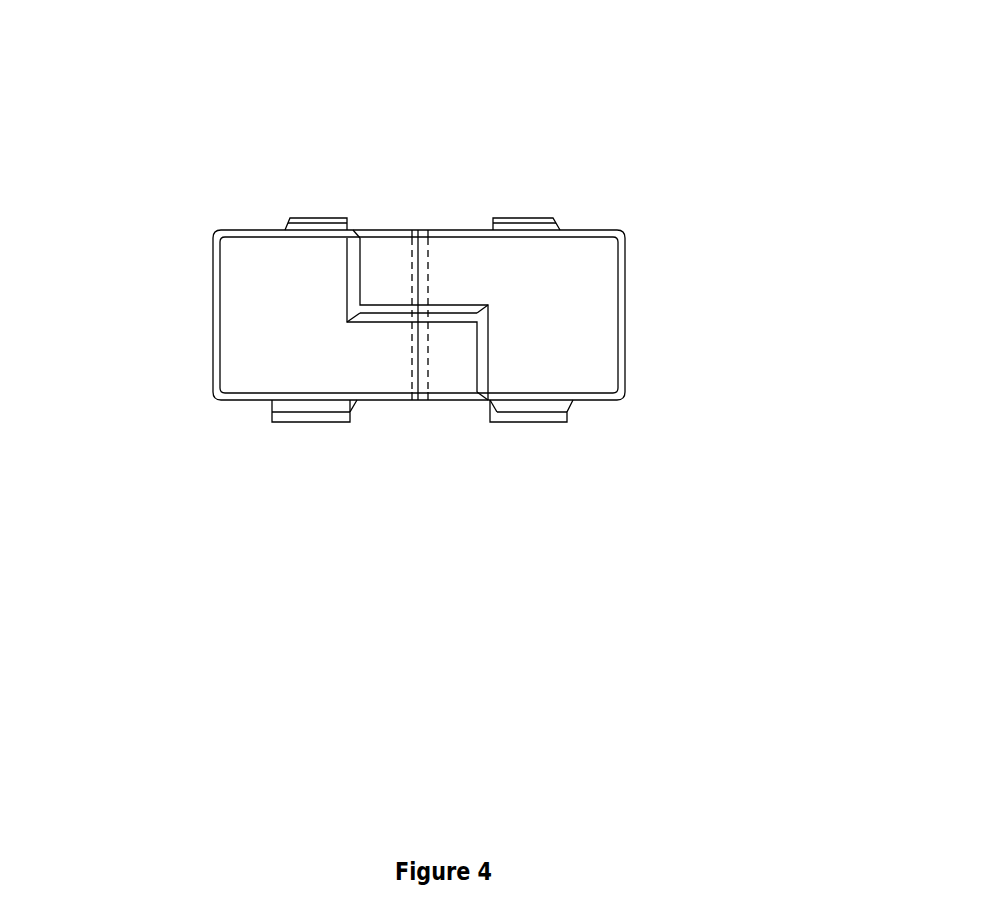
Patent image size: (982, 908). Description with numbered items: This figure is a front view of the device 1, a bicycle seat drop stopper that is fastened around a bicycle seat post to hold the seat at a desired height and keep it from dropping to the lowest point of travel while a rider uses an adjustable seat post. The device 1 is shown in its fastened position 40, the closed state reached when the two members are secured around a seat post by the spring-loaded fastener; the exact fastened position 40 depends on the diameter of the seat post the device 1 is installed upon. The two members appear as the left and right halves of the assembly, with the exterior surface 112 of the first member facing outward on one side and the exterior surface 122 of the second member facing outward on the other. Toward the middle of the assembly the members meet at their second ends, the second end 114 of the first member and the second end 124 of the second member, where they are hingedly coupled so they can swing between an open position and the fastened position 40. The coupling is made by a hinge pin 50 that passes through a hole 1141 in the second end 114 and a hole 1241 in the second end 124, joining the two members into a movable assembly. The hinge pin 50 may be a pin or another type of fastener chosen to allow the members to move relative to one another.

The device 1 is at (408, 288).
The fastened position 40 is at (716, 240).
The hinge pin 50 is at (418, 206).
The exterior surface 112 is at (196, 318).
The exterior surface 122 is at (641, 345).
The second end 114 is at (388, 377).
The second end 124 is at (470, 247).
The hole 1241 is at (405, 233).
The hole 1141 is at (428, 400).